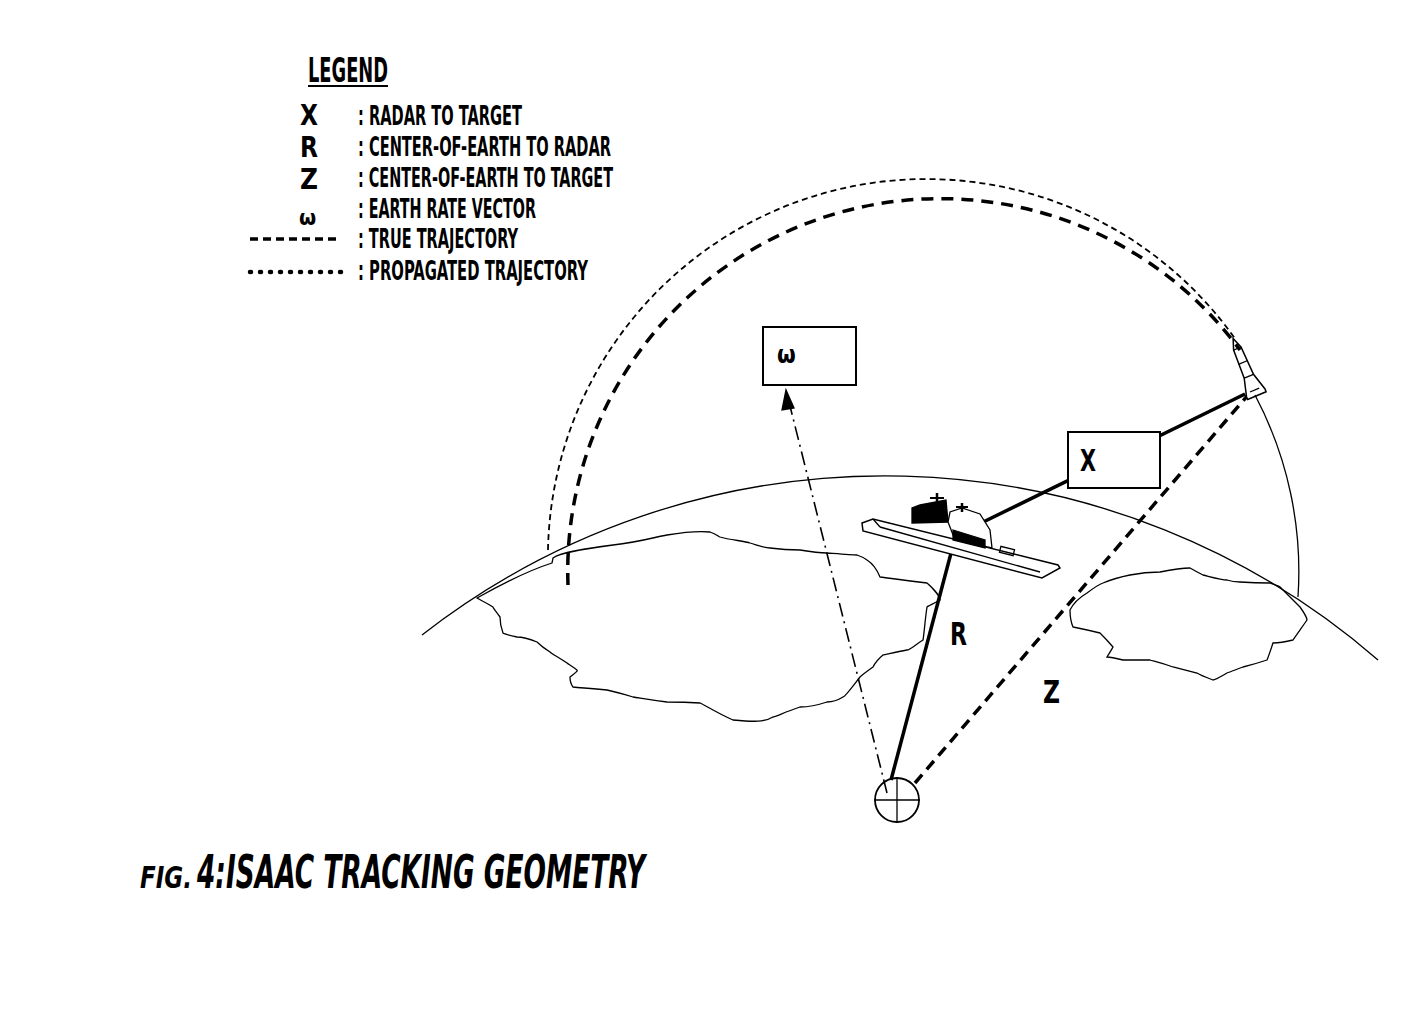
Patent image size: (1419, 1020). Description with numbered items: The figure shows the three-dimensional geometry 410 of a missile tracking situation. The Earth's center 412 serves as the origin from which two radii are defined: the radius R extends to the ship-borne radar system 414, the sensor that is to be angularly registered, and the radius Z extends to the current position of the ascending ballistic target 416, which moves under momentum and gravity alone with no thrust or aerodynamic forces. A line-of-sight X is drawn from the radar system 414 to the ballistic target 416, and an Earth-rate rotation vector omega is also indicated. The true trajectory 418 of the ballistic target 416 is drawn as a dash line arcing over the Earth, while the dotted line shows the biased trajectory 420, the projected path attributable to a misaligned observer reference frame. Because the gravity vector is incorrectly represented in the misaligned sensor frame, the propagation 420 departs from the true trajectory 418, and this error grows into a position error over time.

The three-dimensional geometry 410 is at (745, 814).
The Earth's center 412 is at (1040, 867).
The ship-borne radar system 414 is at (948, 517).
The ballistic target 416 is at (1265, 388).
The true trajectory 418 is at (1043, 213).
The biased trajectory 420 is at (905, 181).